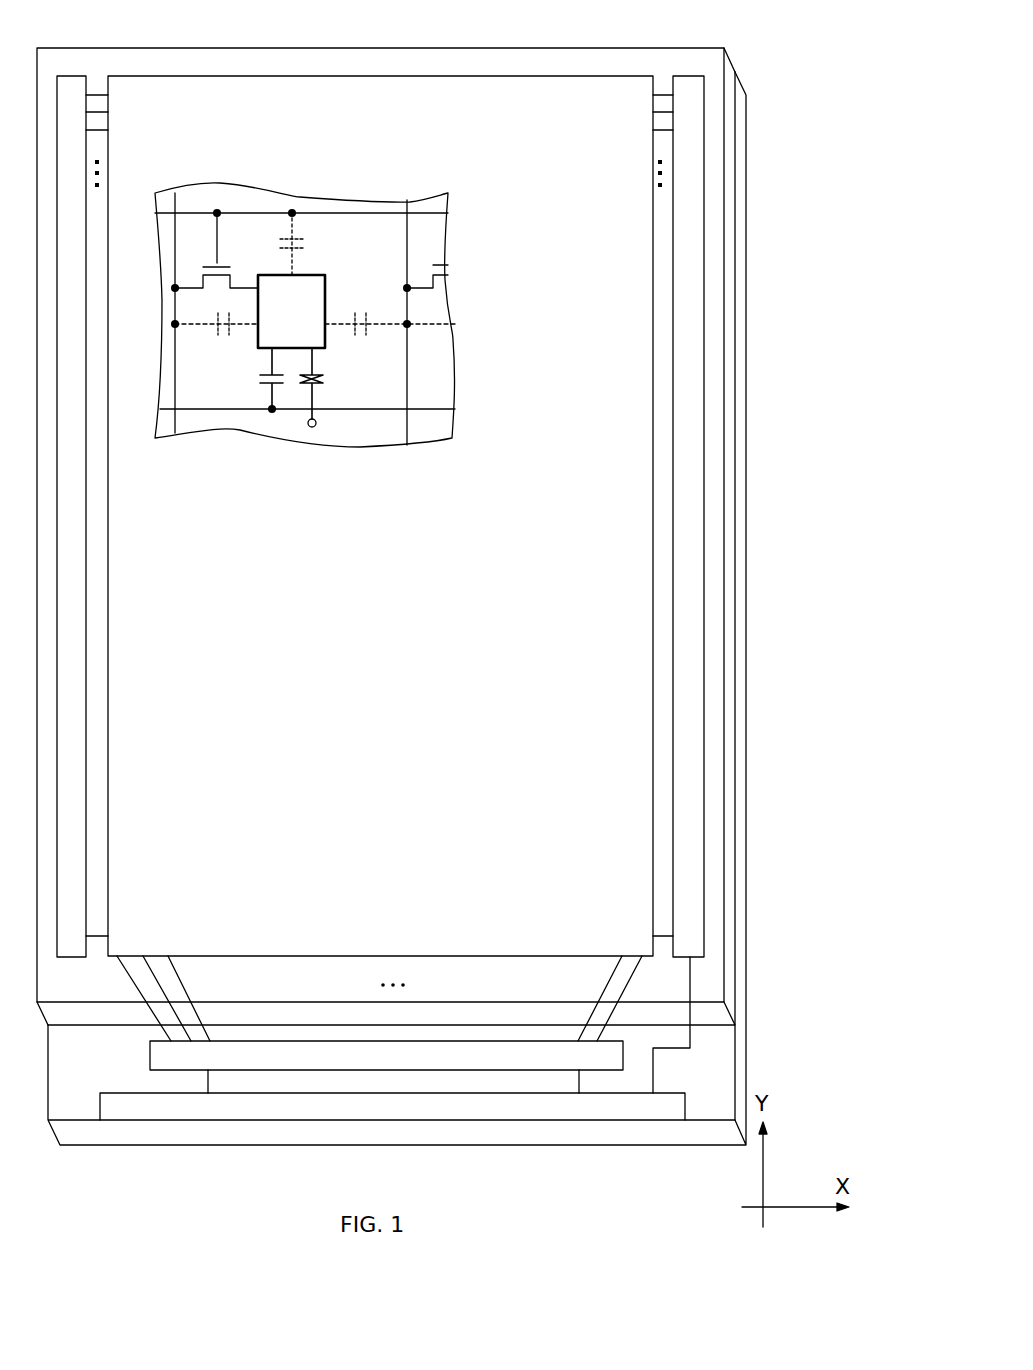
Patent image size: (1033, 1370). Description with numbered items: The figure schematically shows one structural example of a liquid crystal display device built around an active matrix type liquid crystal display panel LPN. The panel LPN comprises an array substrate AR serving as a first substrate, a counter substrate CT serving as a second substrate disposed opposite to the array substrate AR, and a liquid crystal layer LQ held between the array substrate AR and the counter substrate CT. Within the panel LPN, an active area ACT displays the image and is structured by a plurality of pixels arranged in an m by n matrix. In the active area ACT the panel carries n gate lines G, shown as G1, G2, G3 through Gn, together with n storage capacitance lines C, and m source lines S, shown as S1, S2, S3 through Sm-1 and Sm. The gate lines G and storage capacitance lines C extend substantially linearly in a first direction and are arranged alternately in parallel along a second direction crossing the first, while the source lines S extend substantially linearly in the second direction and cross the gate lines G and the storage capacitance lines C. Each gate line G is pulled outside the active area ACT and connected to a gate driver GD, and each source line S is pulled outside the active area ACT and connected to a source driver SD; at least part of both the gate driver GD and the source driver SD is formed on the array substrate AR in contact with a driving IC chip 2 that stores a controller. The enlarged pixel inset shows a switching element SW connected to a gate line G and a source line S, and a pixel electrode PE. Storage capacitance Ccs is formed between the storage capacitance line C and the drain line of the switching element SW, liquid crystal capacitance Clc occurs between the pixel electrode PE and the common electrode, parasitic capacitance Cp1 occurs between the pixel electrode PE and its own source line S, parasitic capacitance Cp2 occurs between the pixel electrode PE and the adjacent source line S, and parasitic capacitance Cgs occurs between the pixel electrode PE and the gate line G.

The liquid crystal display panel LPN is at (537, 46).
The counter substrate CT is at (712, 68).
The array substrate AR is at (725, 1052).
The active area ACT is at (386, 76).
The gate driver GD is at (70, 76).
The source driver SD is at (287, 1046).
The gate line G1 is at (98, 95).
The gate line G2 is at (100, 114).
The gate line G3 is at (100, 131).
The gate line Gn is at (100, 936).
The source line S1 is at (129, 968).
The source line S2 is at (158, 970).
The source line S3 is at (180, 968).
The source line Sm-1 is at (608, 970).
The source line Sm is at (636, 968).
The driving IC chip 2 is at (490, 1122).
The storage capacitance line C is at (222, 411).
The gate line G is at (337, 212).
The source line S is at (177, 202).
The switching element SW is at (224, 262).
The parasitic capacitance Cgs is at (316, 247).
The pixel electrode PE is at (325, 292).
The parasitic capacitance Cp1 is at (214, 339).
The parasitic capacitance Cp2 is at (390, 338).
The storage capacitance Ccs is at (252, 380).
The liquid crystal capacitance Clc is at (332, 387).
The liquid crystal layer LQ is at (316, 386).